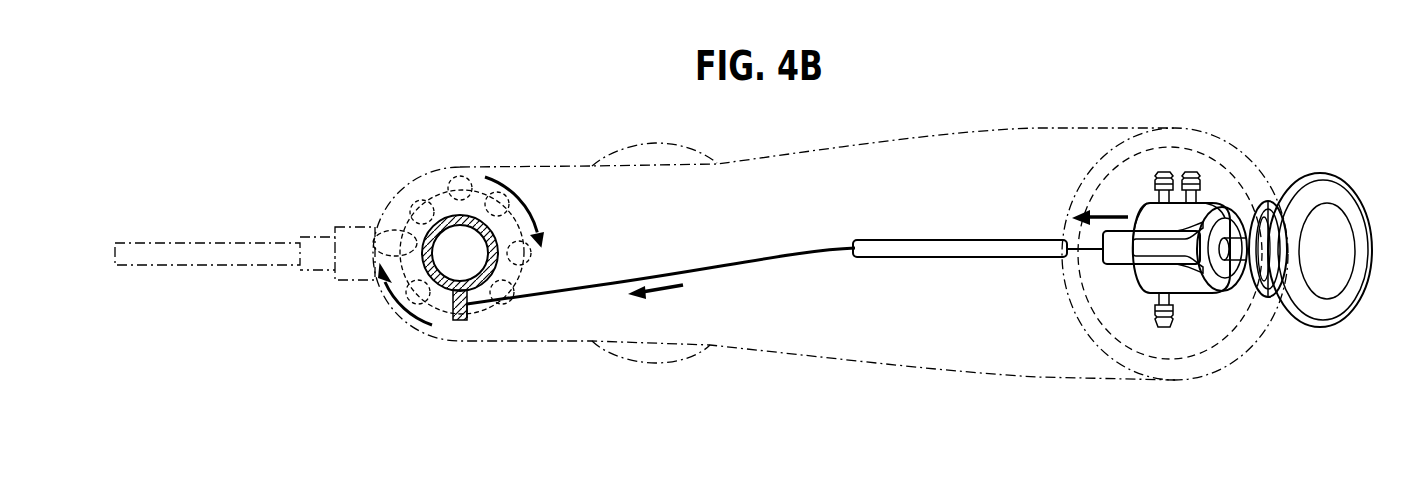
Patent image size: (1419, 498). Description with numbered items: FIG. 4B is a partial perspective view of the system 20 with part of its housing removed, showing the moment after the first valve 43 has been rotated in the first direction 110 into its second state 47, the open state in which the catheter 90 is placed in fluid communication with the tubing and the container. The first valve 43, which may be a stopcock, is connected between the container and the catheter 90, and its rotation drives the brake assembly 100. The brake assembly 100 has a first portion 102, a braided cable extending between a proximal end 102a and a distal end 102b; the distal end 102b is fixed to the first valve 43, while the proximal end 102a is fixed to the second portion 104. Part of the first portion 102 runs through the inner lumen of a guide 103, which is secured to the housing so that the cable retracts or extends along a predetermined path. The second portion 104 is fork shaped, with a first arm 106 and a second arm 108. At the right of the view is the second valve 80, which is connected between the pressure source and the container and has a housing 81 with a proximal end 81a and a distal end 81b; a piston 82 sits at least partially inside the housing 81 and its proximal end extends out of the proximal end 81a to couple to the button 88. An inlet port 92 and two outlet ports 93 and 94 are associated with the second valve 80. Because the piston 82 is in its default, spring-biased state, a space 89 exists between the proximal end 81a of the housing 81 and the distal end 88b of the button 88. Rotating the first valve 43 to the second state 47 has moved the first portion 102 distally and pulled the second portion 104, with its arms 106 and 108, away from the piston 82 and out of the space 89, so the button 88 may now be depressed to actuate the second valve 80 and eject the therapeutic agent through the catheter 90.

The system 20 is at (1042, 111).
The first valve 43 is at (432, 307).
The second state 47 is at (453, 306).
The second valve 80 is at (1184, 297).
The housing 81 is at (1210, 293).
The proximal end 81a is at (1247, 215).
The distal end 81b is at (1140, 210).
The piston 82 is at (1240, 249).
The button 88 is at (1350, 243).
The distal end 88b is at (1263, 300).
The space 89 is at (1265, 193).
The catheter 90 is at (225, 243).
The inlet port 92 is at (1150, 304).
The outlet port 93 is at (1207, 200).
The outlet port 94 is at (1160, 197).
The brake assembly 100 is at (887, 245).
The first portion 102 is at (650, 272).
The proximal end 102a is at (1100, 247).
The distal end 102b is at (468, 304).
The guide 103 is at (950, 245).
The second portion 104 is at (1113, 261).
The first arm 106 is at (1162, 237).
The second arm 108 is at (1147, 263).
The first direction 110 is at (515, 190).